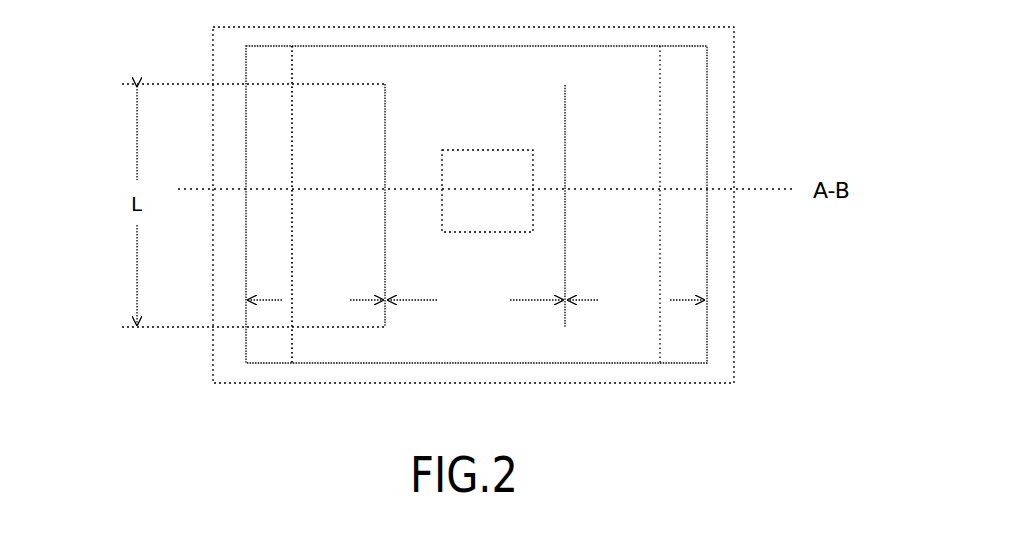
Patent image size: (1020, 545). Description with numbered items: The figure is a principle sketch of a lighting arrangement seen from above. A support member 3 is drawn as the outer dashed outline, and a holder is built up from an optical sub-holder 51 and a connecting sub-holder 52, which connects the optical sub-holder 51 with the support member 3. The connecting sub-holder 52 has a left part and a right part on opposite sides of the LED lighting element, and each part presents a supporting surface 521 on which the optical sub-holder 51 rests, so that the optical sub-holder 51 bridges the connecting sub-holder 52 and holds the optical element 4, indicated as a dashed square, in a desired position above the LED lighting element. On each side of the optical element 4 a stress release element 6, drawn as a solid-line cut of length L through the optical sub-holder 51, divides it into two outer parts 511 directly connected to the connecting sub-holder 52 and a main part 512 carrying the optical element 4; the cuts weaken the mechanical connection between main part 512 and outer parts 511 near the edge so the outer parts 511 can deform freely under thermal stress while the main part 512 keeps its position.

The support member 3 is at (735, 80).
The optical element 4 is at (487, 149).
The stress release element 6 is at (387, 125).
The optical sub-holder 51 is at (707, 205).
The outer parts 511 is at (337, 312).
The main part 512 is at (495, 312).
The connecting sub-holder 52 is at (265, 355).
The supporting surface 521 is at (687, 156).